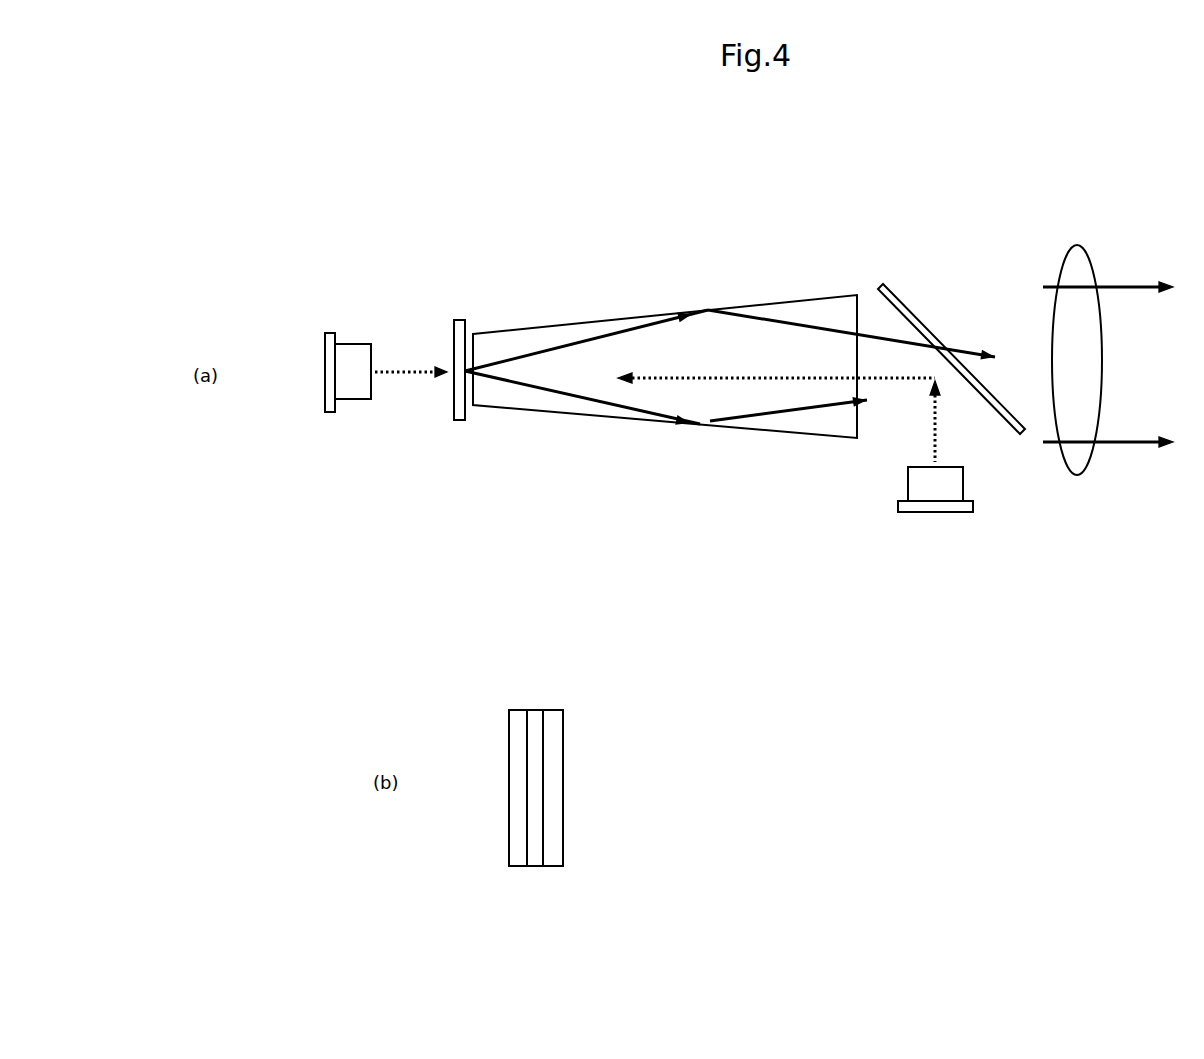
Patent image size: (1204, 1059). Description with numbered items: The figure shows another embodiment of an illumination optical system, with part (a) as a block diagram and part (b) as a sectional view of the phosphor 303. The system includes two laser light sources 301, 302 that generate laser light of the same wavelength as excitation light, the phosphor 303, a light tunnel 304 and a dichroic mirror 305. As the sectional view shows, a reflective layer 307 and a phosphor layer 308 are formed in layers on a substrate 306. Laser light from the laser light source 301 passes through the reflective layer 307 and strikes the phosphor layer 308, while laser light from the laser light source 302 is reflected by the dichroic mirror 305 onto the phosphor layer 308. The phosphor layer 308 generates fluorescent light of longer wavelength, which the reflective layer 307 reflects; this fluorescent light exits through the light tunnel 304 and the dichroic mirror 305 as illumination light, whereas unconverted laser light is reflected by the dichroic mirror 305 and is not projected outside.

The laser light source 301 is at (325, 371).
The laser light source 302 is at (892, 512).
The phosphor 303 is at (464, 318).
The light tunnel 304 is at (733, 307).
The dichroic mirror 305 is at (897, 297).
The substrate 306 is at (509, 814).
The reflective layer 307 is at (533, 710).
The phosphor layer 308 is at (563, 720).